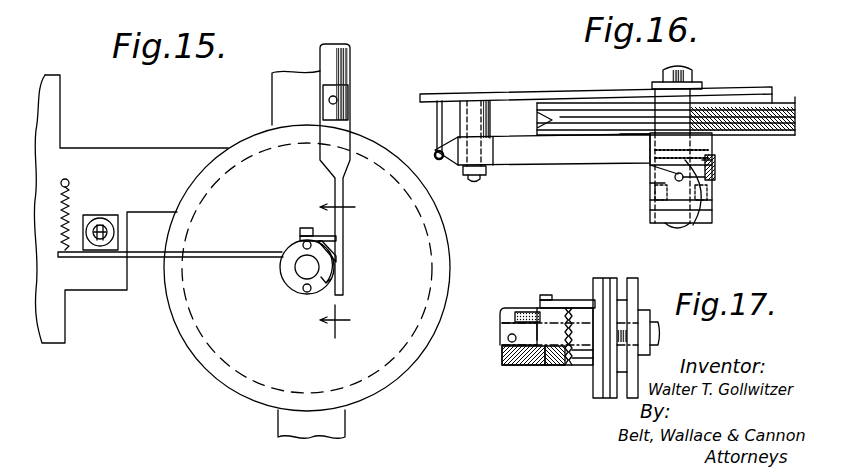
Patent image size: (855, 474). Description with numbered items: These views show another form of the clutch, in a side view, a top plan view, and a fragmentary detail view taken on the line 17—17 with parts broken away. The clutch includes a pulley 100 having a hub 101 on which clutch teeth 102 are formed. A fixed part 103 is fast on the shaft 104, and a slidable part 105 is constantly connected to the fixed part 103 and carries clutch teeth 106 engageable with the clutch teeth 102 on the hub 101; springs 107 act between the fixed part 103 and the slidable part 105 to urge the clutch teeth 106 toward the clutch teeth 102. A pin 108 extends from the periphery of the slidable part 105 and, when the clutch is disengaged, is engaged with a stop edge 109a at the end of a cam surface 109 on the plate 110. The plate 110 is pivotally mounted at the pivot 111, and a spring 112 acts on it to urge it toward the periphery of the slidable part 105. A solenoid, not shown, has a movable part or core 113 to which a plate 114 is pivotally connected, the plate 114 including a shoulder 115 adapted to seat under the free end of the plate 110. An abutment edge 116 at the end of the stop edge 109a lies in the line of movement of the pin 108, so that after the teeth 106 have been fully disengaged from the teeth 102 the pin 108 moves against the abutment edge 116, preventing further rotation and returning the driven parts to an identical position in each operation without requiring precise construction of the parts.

In FIG. 15, the section line 17— 17 is at (350, 271).
In FIG. 15, the pulley 100 is at (436, 235).
In FIG. 16, the pulley 100 is at (788, 133).
In FIG. 17, the pulley 100 is at (615, 280).
In FIG. 16, the hub 101 is at (712, 143).
In FIG. 17, the hub 101 is at (592, 372).
In FIG. 16, the clutch teeth 102 is at (660, 151).
In FIG. 17, the clutch teeth 102 is at (580, 368).
In FIG. 15, the fixed part 103 is at (283, 262).
In FIG. 16, the fixed part 103 is at (650, 216).
In FIG. 17, the fixed part 103 is at (505, 363).
In FIG. 15, the shaft 104 is at (307, 268).
In FIG. 16, the shaft 104 is at (690, 74).
In FIG. 17, the shaft 104 is at (655, 330).
In FIG. 16, the slidable part 105 is at (712, 200).
In FIG. 17, the slidable part 105 is at (531, 309).
In FIG. 16, the clutch teeth 106 is at (715, 178).
In FIG. 17, the clutch teeth 106 is at (560, 366).
In FIG. 17, the springs 107 is at (517, 366).
In FIG. 15, the pin 108 is at (307, 228).
In FIG. 16, the pin 108 is at (650, 184).
In FIG. 17, the pin 108 is at (560, 289).
In FIG. 16, the cam surface 109 is at (675, 177).
In FIG. 16, the stop edge 109a is at (712, 160).
In FIG. 15, the plate 110 is at (218, 240).
In FIG. 16, the plate 110 is at (550, 156).
In FIG. 17, the plate 110 is at (578, 300).
In FIG. 15, the pivot 111 is at (105, 222).
In FIG. 16, the pivot 111 is at (482, 176).
In FIG. 15, the spring 112 is at (68, 204).
In FIG. 16, the spring 112 is at (435, 152).
In FIG. 15, the movable part or core 113 is at (350, 62).
In FIG. 15, the plate 114 is at (350, 112).
In FIG. 15, the shoulder 115 is at (340, 247).
In FIG. 16, the abutment edge 116 is at (692, 228).